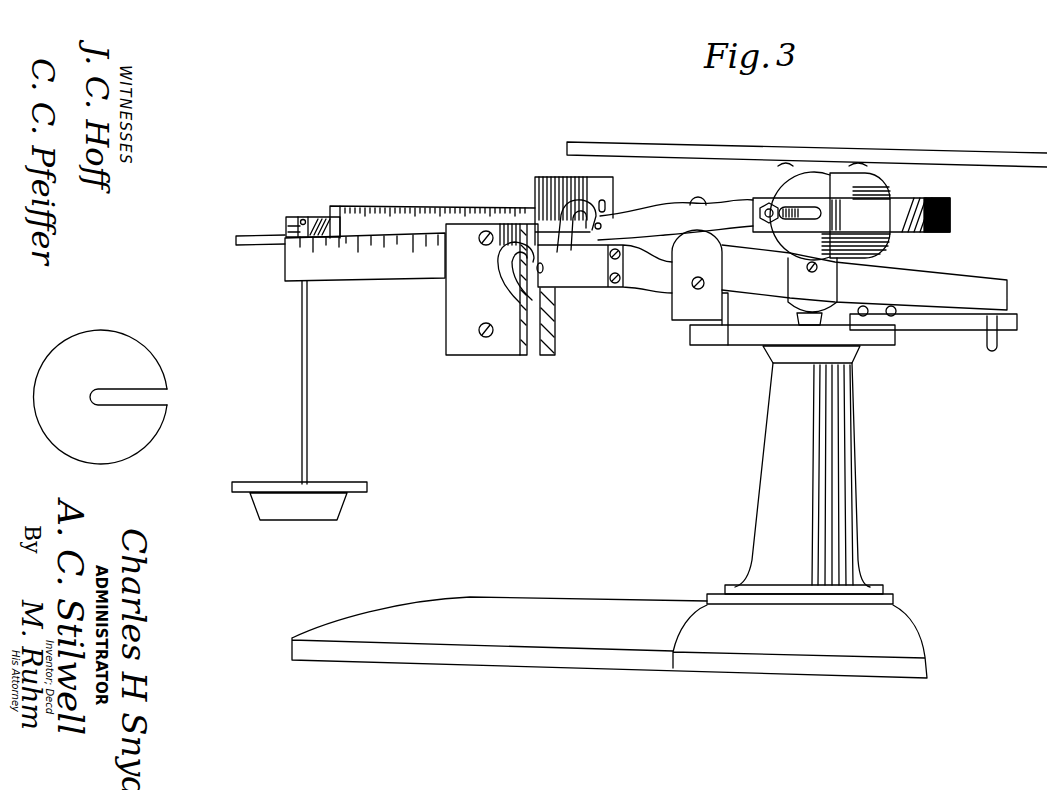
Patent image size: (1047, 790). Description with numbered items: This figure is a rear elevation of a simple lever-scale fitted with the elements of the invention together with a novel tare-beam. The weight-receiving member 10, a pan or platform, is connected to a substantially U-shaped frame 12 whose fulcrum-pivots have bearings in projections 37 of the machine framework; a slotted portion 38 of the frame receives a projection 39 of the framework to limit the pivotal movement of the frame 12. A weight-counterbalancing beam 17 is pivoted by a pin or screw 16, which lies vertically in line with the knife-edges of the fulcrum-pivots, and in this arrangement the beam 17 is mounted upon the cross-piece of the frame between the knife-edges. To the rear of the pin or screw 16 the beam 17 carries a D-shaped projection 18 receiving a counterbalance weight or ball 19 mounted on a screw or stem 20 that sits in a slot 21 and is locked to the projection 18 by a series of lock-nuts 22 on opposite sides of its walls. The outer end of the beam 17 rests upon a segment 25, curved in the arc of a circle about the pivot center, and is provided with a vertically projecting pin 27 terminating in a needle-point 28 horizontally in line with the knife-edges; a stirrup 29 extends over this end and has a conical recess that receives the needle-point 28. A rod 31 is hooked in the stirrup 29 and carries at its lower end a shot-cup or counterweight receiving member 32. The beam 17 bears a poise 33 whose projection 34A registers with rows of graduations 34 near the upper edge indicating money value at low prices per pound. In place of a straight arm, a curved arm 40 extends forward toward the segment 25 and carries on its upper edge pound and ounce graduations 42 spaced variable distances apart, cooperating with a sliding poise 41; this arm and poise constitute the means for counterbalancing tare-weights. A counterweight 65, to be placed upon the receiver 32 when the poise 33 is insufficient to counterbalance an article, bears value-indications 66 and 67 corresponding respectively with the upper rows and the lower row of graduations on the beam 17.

The weight-receiving member 10 is at (806, 151).
The frame 12 is at (864, 277).
The pin or screw 16 is at (692, 207).
The beam 17 is at (352, 213).
The D-shaped projection 18 is at (851, 215).
The counterbalance weight or ball 19 is at (830, 248).
The screw or stem 20 is at (767, 211).
The slot 21 is at (808, 219).
The lock-nuts 22 is at (771, 221).
The segment 25 is at (260, 240).
The pin 27 is at (297, 232).
The needle-point 28 is at (312, 220).
The stirrup 29 is at (296, 221).
The rod 31 is at (309, 318).
The shot-cup or counterweight receiving member 32 is at (299, 501).
The poise 33 is at (604, 189).
The rows of graduations 34 is at (452, 212).
The projection 34A is at (600, 222).
The projections of the framework 37 is at (700, 287).
The slotted portion 38 is at (998, 343).
The projection of the framework 39 is at (957, 330).
The curved arm 40 is at (605, 269).
The poise 41 is at (500, 289).
The pound and ounce graduations 42 is at (362, 246).
The counterweight 65 is at (143, 444).
The value-indication 66 is at (128, 358).
The value-indication 67 is at (104, 448).